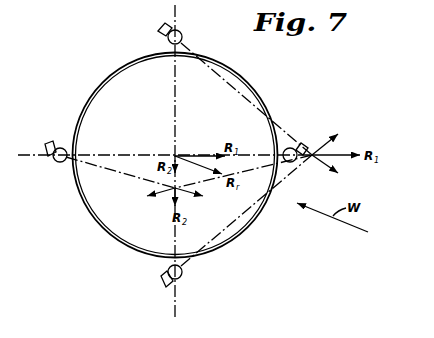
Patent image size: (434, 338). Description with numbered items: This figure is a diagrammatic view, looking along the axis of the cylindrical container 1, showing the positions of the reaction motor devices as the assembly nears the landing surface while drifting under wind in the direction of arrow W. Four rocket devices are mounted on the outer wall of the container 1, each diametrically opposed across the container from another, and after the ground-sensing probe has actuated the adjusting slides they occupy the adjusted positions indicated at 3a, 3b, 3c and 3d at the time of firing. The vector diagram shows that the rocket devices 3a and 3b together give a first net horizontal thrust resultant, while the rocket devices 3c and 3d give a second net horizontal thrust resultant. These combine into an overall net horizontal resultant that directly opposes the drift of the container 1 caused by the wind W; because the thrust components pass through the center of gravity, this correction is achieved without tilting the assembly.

The container 1 is at (94, 97).
The rocket device 3a is at (182, 34).
The rocket device 3b is at (181, 277).
The rocket device 3c is at (56, 162).
The rocket device 3d is at (286, 128).